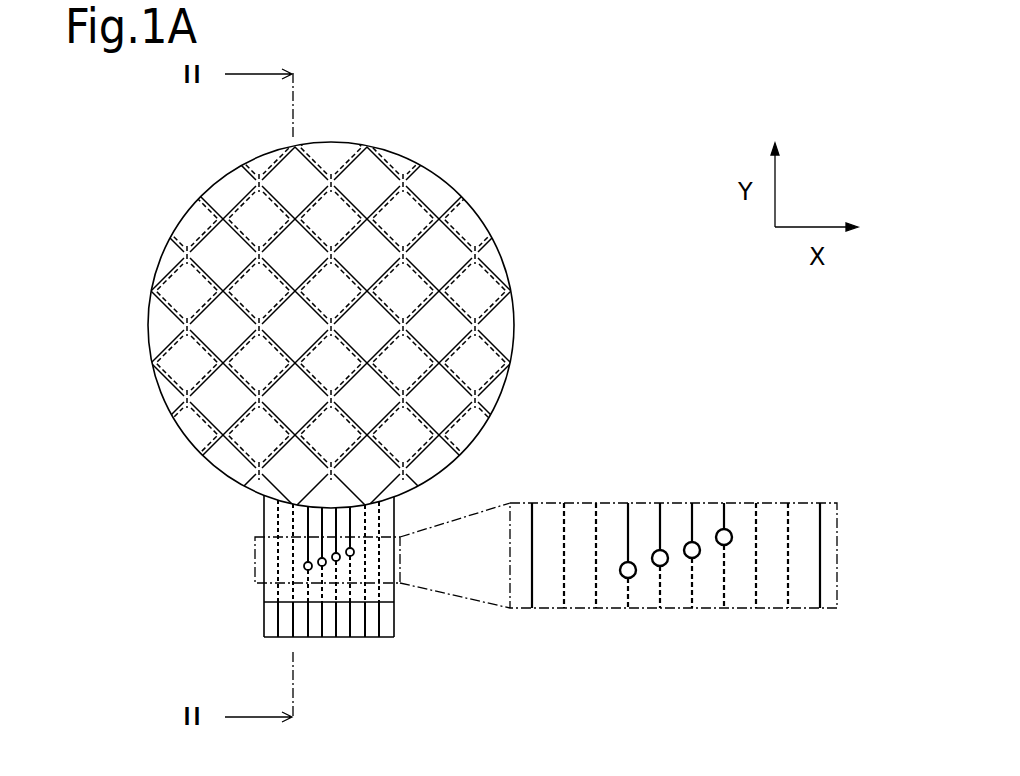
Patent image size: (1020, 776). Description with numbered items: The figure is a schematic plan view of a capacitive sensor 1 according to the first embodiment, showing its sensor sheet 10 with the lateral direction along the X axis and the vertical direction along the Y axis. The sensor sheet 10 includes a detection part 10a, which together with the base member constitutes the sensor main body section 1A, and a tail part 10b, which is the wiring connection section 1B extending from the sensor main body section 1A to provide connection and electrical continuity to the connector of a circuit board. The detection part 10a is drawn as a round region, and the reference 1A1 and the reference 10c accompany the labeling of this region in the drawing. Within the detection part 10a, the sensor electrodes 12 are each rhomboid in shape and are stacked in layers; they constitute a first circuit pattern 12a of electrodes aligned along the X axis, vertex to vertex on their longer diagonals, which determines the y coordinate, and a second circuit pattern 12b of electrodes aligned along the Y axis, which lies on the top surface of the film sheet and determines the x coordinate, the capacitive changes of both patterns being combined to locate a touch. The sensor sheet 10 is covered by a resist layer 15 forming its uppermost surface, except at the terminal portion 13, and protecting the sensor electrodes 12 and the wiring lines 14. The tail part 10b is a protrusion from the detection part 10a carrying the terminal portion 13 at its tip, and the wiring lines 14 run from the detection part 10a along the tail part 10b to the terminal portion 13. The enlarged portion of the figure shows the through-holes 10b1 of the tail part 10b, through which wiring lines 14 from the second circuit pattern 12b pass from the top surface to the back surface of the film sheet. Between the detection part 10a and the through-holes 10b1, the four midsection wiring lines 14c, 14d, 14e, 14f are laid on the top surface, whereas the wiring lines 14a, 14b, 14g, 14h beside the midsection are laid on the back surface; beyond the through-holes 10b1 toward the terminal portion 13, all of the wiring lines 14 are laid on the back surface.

The capacitive sensor 1 is at (598, 170).
The sensor main body section 1A is at (468, 207).
The outer edge of detection region 1A1 is at (495, 240).
The wiring connection section 1B is at (395, 622).
The sensor sheet 10 is at (183, 232).
The detection part 10a is at (297, 325).
The second conductive layer 10c is at (297, 325).
The tail part 10b is at (270, 560).
The through-holes 10b1 is at (658, 567).
The sensor electrodes 12 is at (393, 157).
The first circuit pattern 12a is at (507, 338).
The second circuit pattern 12b is at (482, 282).
The terminal portion 13 is at (263, 617).
The wiring lines 14 is at (277, 572).
The wiring line 14a is at (550, 500).
The wiring line 14b is at (585, 498).
The wiring line 14c is at (615, 500).
The wiring line 14d is at (647, 500).
The wiring line 14e is at (677, 500).
The wiring line 14f is at (710, 500).
The wiring line 14g is at (743, 500).
The wiring line 14h is at (780, 500).
The resist layer 15 is at (162, 325).